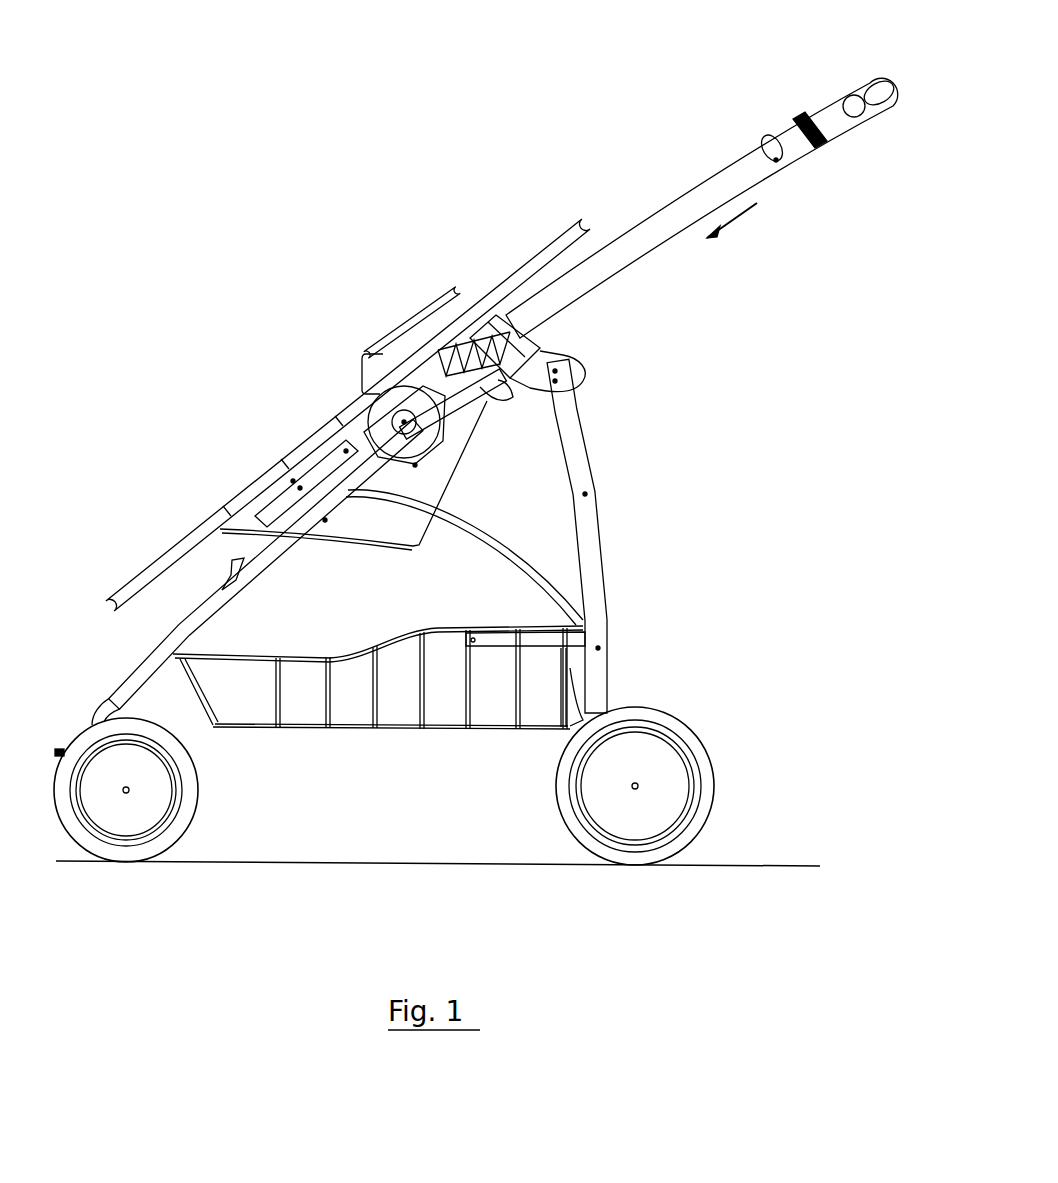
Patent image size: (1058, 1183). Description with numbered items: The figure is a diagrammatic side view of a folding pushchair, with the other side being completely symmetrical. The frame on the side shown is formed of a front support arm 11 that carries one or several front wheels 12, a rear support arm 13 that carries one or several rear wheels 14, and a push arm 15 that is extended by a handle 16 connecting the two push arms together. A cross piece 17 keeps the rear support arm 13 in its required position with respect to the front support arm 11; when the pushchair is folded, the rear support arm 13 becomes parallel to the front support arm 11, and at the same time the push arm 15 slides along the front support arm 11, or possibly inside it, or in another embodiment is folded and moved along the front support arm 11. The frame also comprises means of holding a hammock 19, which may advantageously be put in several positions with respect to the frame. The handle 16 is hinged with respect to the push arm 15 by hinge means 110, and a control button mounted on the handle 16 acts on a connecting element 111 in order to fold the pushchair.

The front support arm 11 is at (185, 620).
The front wheels 12 is at (185, 785).
The rear support arm 13 is at (593, 563).
The rear wheels 14 is at (672, 720).
The push arm 15 is at (616, 247).
The handle 16 is at (845, 93).
The cross piece 17 is at (488, 535).
The hammock 19 is at (433, 460).
The hinge means 110 is at (772, 150).
The connecting element 111 is at (479, 310).